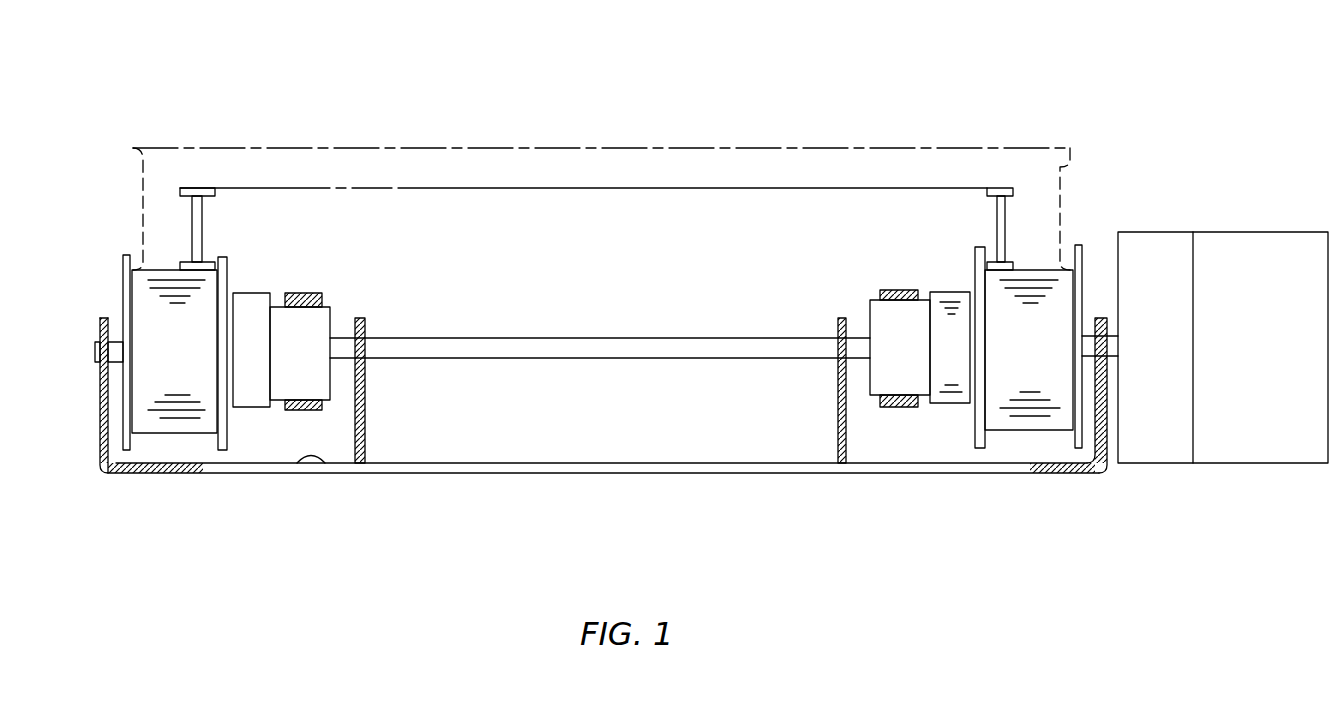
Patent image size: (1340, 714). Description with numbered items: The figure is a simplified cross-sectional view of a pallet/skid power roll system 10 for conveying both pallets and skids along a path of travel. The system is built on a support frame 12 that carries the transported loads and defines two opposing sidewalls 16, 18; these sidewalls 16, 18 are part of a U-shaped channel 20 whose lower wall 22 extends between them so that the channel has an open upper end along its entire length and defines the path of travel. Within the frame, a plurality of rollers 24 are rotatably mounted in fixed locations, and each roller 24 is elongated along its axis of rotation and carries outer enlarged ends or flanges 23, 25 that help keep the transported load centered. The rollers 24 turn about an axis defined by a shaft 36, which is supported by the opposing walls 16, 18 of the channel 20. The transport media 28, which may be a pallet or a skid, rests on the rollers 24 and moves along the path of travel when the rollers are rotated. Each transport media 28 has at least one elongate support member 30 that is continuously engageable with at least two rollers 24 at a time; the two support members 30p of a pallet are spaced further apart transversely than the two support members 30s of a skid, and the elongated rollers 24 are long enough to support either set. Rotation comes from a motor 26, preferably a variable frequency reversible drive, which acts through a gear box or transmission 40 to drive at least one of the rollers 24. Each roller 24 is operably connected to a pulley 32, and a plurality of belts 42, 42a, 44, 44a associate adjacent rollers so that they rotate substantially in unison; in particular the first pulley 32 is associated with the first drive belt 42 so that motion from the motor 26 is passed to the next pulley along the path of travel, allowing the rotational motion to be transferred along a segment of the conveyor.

The pallet/skid power roll system 10 is at (595, 487).
The support frame 12 is at (716, 478).
The sidewall 16 is at (100, 408).
The sidewall 18 is at (1106, 420).
The U-shaped channel 20 is at (278, 490).
The lower wall 22 is at (328, 473).
The enlarged end or flange 23 is at (123, 278).
The roller 24 is at (183, 410).
The enlarged end or flange 25 is at (228, 268).
The motor 26 is at (1228, 243).
The transport media 28 is at (622, 132).
The elongate support member 30 is at (128, 213).
The elongate support member of the pallet 30p is at (140, 185).
The elongate support member of the skid 30s is at (203, 232).
The pulley 32 is at (330, 323).
The shaft 36 is at (678, 338).
The gear box or transmission 40 is at (1150, 243).
The first drive belt 42 is at (258, 407).
The belt 42a is at (302, 293).
The belt 44 is at (955, 405).
The belt 44a is at (880, 302).